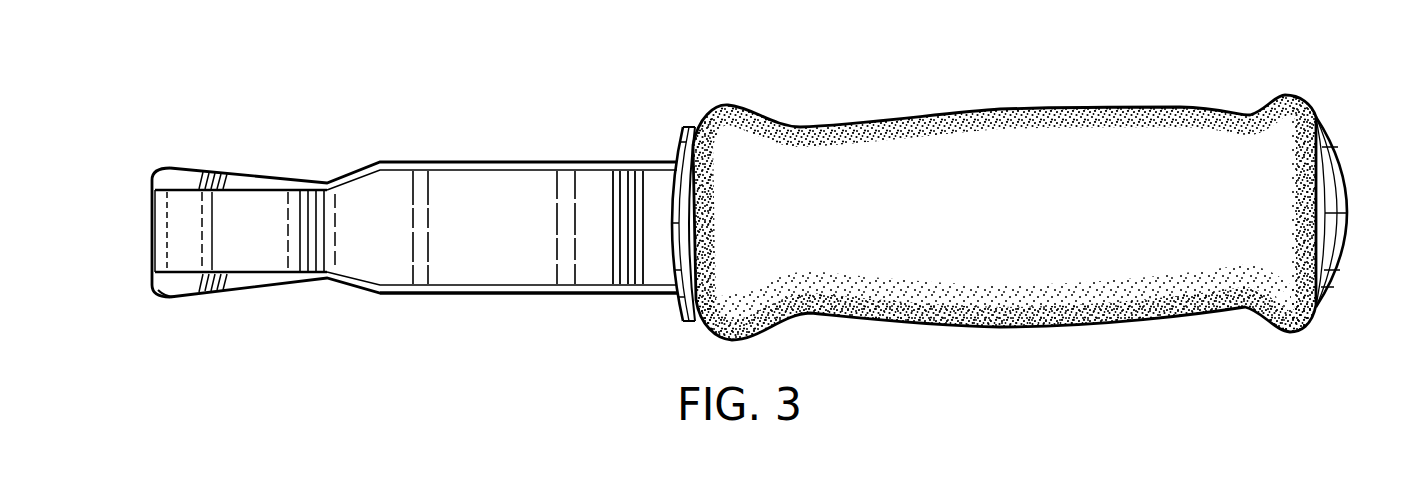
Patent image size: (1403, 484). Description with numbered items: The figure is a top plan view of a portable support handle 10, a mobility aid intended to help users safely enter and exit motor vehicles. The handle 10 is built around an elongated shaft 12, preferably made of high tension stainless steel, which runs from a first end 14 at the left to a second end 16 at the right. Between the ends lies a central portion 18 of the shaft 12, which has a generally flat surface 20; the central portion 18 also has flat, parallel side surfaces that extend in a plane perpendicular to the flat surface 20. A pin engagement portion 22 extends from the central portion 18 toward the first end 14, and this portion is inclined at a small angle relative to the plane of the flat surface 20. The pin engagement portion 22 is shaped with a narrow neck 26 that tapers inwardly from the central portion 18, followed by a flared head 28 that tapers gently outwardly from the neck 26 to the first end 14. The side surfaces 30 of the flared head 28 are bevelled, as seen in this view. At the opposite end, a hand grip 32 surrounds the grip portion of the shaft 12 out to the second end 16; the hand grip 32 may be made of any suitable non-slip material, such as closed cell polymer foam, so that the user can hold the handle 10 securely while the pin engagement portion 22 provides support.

The portable support handle 10 is at (549, 117).
The elongated shaft 12 is at (618, 150).
The first end 14 is at (151, 223).
The second end 16 is at (1308, 112).
The central portion 18 is at (493, 305).
The flat surface 20 is at (512, 239).
The pin engagement portion 22 is at (285, 124).
The narrow neck 26 is at (321, 295).
The flared head 28 is at (246, 304).
The side surfaces 30 is at (177, 300).
The hand grip 32 is at (1007, 116).